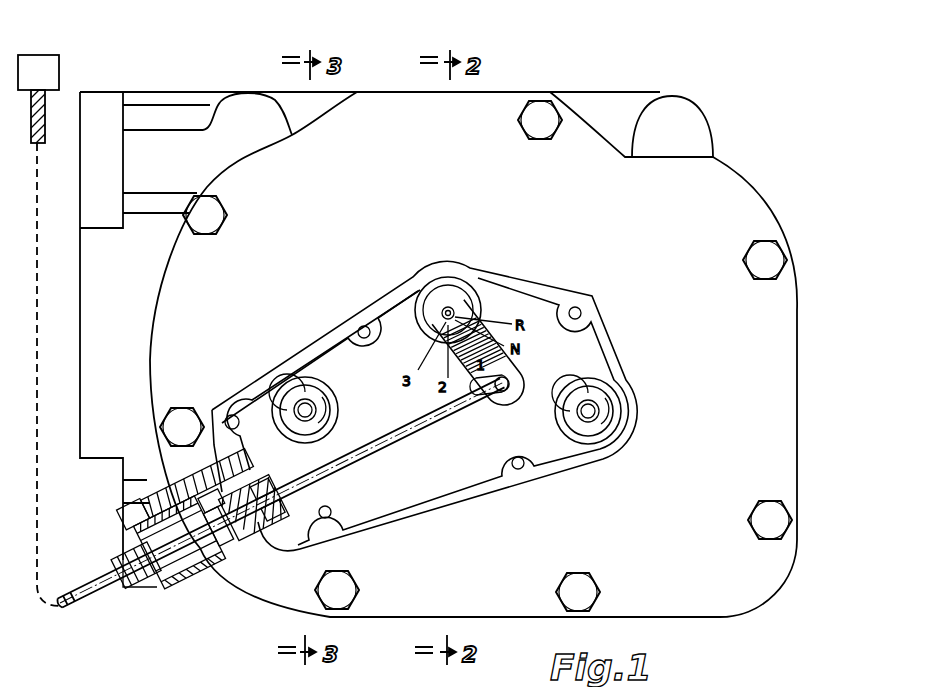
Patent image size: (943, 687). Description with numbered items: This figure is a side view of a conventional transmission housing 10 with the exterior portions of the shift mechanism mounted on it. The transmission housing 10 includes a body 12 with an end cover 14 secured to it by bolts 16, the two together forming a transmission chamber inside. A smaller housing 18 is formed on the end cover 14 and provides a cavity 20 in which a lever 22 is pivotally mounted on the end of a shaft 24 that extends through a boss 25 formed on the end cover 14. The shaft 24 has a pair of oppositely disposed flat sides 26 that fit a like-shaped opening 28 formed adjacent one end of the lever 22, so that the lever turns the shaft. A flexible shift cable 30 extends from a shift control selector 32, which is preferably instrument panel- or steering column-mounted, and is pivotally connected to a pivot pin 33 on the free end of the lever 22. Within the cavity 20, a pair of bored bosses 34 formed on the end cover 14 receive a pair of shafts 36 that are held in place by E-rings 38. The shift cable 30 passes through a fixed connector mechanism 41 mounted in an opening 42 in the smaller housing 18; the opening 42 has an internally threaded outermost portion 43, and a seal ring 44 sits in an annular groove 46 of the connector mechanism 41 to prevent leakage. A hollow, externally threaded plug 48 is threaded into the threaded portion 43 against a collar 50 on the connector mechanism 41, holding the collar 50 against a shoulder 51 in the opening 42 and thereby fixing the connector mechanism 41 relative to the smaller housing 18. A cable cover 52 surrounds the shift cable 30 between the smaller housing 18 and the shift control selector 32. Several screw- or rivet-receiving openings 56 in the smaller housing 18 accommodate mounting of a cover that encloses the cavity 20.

The transmission housing 10 is at (116, 80).
The body 12 is at (622, 115).
The end cover 14 is at (723, 190).
The bolts 16 is at (770, 256).
The smaller housing 18 is at (613, 350).
The cavity 20 is at (478, 466).
The lever 22 is at (456, 318).
The shaft 24 is at (448, 300).
The boss 25 is at (416, 304).
The flat sides 26 is at (462, 290).
The opening 28 is at (444, 318).
The flexible shift cable 30 is at (282, 388).
The shift control selector 32 is at (36, 68).
The pivot pin 33 is at (509, 384).
The bored bosses 34 is at (333, 397).
The shafts 36 is at (305, 420).
The E-rings 38 is at (309, 404).
The fixed connector mechanism 41 is at (242, 562).
The opening 42 is at (210, 496).
The internally threaded outermost portion 43 is at (160, 486).
The seal ring 44 is at (252, 556).
The annular groove 46 is at (266, 506).
The hollow externally threaded plug 48 is at (124, 504).
The collar 50 is at (186, 576).
The shoulder 51 is at (216, 550).
The cable cover 52 is at (122, 580).
The screw- or rivet-receiving openings 56 is at (364, 325).